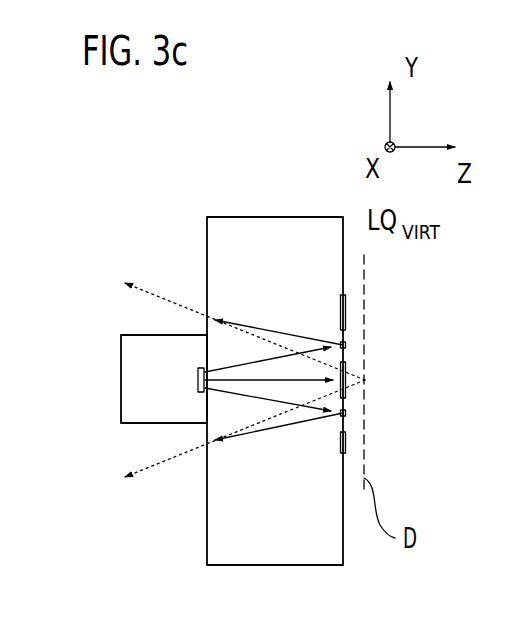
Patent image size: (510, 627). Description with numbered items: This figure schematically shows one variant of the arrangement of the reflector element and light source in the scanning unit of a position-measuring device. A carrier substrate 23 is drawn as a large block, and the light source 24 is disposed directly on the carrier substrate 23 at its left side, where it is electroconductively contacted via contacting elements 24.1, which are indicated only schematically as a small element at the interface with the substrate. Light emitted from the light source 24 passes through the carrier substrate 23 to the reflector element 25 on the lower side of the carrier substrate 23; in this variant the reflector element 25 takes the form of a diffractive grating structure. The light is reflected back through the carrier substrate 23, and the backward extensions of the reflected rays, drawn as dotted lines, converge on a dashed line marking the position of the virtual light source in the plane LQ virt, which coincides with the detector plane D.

The carrier substrate 23 is at (268, 248).
The light source 24 is at (132, 362).
The contacting elements 24.1 is at (198, 377).
The reflector element 25 is at (347, 440).